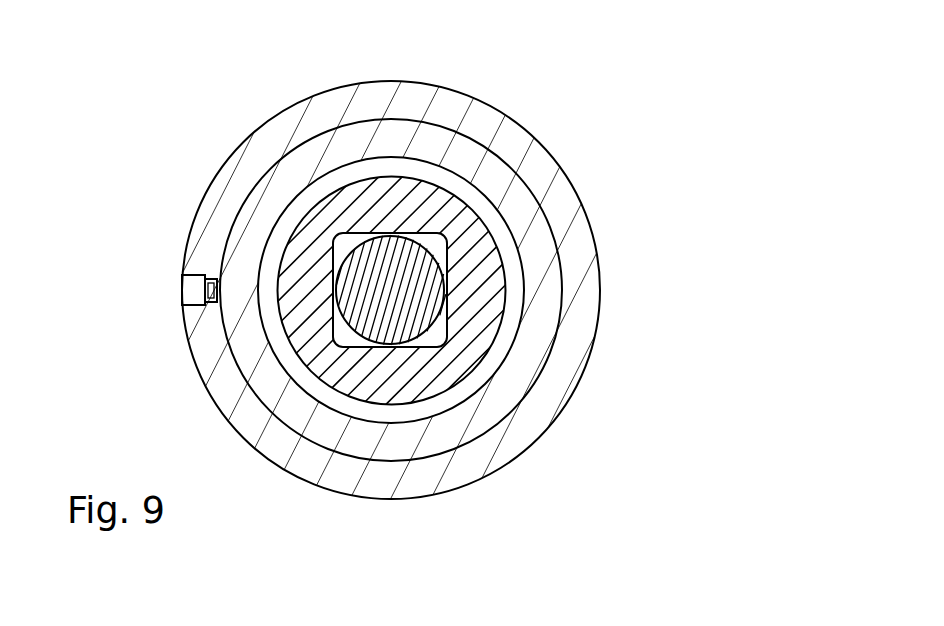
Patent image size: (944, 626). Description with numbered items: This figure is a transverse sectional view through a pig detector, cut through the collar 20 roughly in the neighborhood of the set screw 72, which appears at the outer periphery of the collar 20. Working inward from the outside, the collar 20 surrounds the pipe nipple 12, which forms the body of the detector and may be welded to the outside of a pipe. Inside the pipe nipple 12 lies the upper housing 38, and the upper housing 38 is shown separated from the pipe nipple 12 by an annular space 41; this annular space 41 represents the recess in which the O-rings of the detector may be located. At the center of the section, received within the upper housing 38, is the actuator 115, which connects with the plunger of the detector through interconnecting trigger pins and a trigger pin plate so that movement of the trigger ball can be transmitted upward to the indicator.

The pipe nipple 12 is at (426, 140).
The collar 20 is at (528, 157).
The annular space 41 is at (307, 200).
The upper housing 38 is at (303, 313).
The actuator 115 is at (383, 295).
The set screw 72 is at (195, 288).